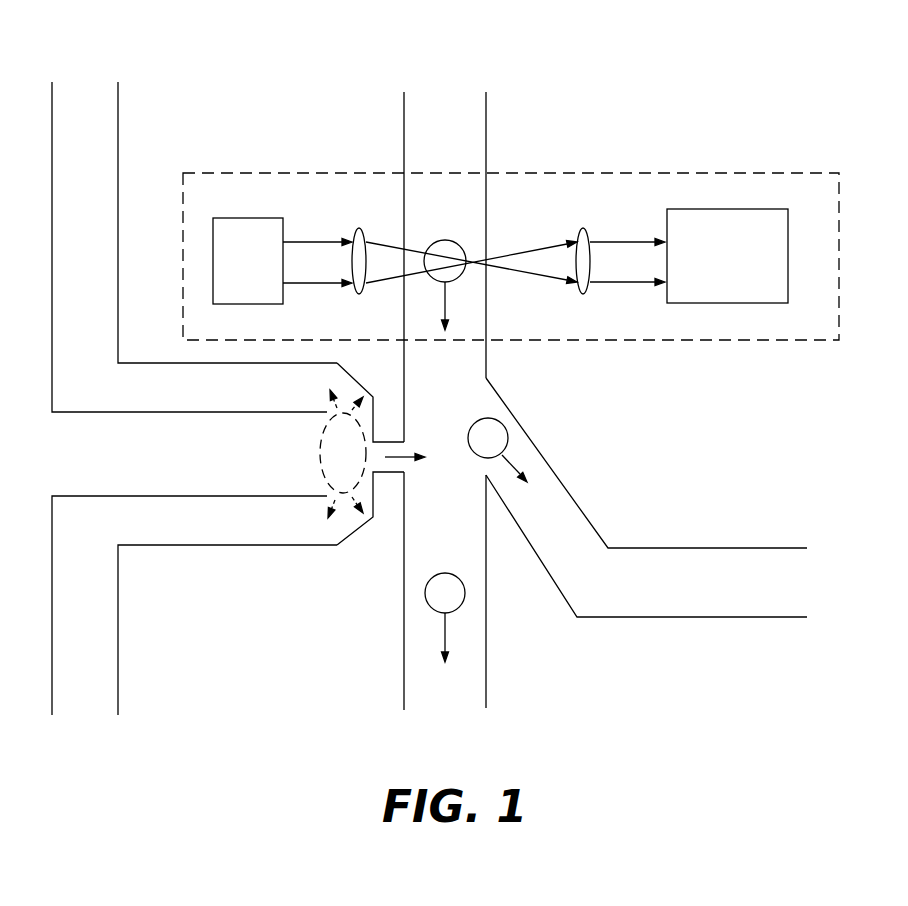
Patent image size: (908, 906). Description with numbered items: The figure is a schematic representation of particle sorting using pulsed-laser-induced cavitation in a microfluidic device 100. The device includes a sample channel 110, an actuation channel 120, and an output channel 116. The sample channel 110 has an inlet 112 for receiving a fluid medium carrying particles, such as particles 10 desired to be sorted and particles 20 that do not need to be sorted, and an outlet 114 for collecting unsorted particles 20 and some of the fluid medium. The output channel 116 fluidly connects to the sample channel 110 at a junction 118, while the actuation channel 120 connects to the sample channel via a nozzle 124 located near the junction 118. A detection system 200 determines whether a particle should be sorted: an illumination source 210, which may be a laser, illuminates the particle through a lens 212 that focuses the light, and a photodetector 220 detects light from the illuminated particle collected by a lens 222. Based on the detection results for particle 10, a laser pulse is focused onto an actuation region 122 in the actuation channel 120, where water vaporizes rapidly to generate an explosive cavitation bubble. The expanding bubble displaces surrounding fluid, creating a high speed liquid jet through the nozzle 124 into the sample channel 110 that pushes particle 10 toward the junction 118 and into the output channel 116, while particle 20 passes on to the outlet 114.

The particle 10 is at (438, 240).
The particle 20 is at (425, 593).
The microfluidic device 100 is at (590, 663).
The sample channel 110 is at (487, 128).
The inlet 112 is at (447, 106).
The outlet 114 is at (452, 695).
The output channel 116 is at (700, 548).
The junction 118 is at (492, 402).
The actuation channel 120 is at (118, 155).
The actuation region 122 is at (308, 463).
The nozzle 124 is at (397, 441).
The detection system 200 is at (812, 173).
The illumination source 210 is at (258, 217).
The lens 212 is at (357, 229).
The photodetector 220 is at (717, 209).
The lens 222 is at (582, 229).